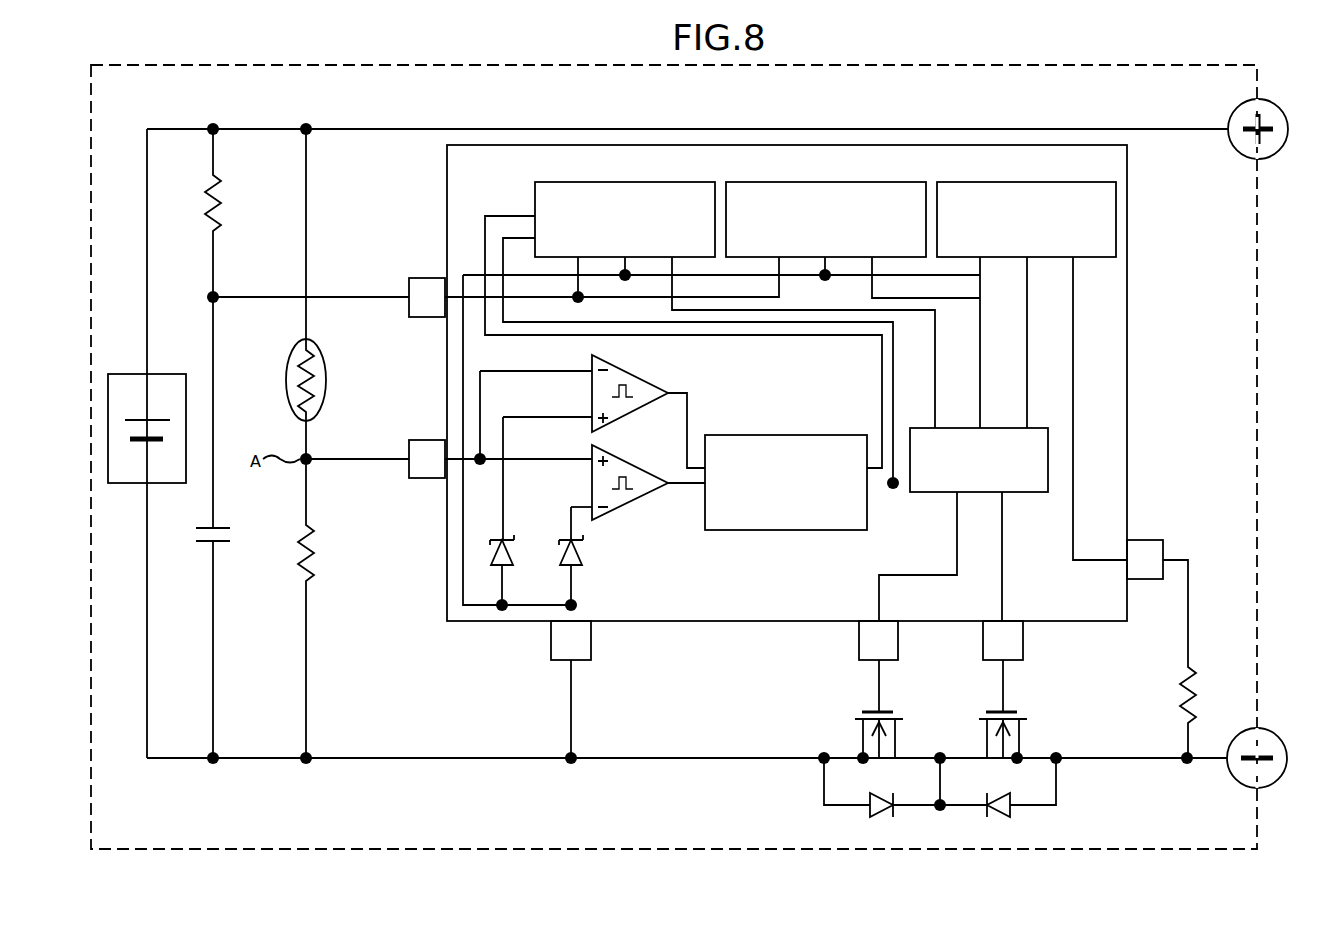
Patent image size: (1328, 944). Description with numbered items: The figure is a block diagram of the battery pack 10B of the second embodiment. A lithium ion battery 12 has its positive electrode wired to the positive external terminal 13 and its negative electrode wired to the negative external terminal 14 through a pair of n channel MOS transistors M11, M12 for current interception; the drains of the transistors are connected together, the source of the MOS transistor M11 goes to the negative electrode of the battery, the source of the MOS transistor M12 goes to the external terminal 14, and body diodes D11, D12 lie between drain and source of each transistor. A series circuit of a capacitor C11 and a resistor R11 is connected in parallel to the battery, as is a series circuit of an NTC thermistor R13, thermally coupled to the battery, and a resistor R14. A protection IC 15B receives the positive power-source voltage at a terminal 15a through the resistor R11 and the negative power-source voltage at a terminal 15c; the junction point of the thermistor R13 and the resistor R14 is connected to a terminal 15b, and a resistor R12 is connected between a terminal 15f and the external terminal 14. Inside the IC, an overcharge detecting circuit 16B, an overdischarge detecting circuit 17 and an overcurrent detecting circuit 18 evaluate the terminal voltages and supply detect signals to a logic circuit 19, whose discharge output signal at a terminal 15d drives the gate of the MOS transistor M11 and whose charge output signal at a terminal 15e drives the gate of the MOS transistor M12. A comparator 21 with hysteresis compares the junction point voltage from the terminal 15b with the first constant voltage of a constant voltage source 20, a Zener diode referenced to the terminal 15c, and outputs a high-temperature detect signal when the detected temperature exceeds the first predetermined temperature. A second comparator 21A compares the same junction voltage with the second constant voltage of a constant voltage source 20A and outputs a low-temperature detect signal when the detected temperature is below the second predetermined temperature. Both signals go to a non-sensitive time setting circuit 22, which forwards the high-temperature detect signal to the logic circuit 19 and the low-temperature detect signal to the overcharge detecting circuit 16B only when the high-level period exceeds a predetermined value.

The battery pack 10B is at (948, 66).
The lithium ion battery 12 is at (115, 483).
The external terminal 13 is at (1279, 151).
The external terminal 14 is at (1278, 738).
The protection IC 15B is at (1129, 285).
The terminal 15a is at (409, 315).
The terminal 15b is at (409, 445).
The terminal 15c is at (551, 640).
The terminal 15d is at (859, 652).
The terminal 15e is at (983, 652).
The terminal 15f is at (1163, 543).
The overcharge detecting circuit 16B is at (672, 182).
The overdischarge detecting circuit 17 is at (867, 182).
The overcurrent detecting circuit 18 is at (1040, 182).
The logic circuit 19 is at (1045, 492).
The constant voltage source 20 is at (577, 565).
The constant voltage source 20A is at (543, 582).
The comparator 21 is at (632, 462).
The comparator 21A is at (632, 372).
The non-sensitive time setting circuit 22 is at (867, 505).
The resistor R11 is at (233, 213).
The resistor R12 is at (1198, 659).
The thermistor R13 is at (321, 294).
The resistor R14 is at (325, 608).
The capacitor C11 is at (233, 527).
The body diode D11 is at (882, 801).
The body diode D12 is at (998, 801).
The n channel MOS transistor M11 is at (873, 710).
The n channel MOS transistor M12 is at (1010, 710).